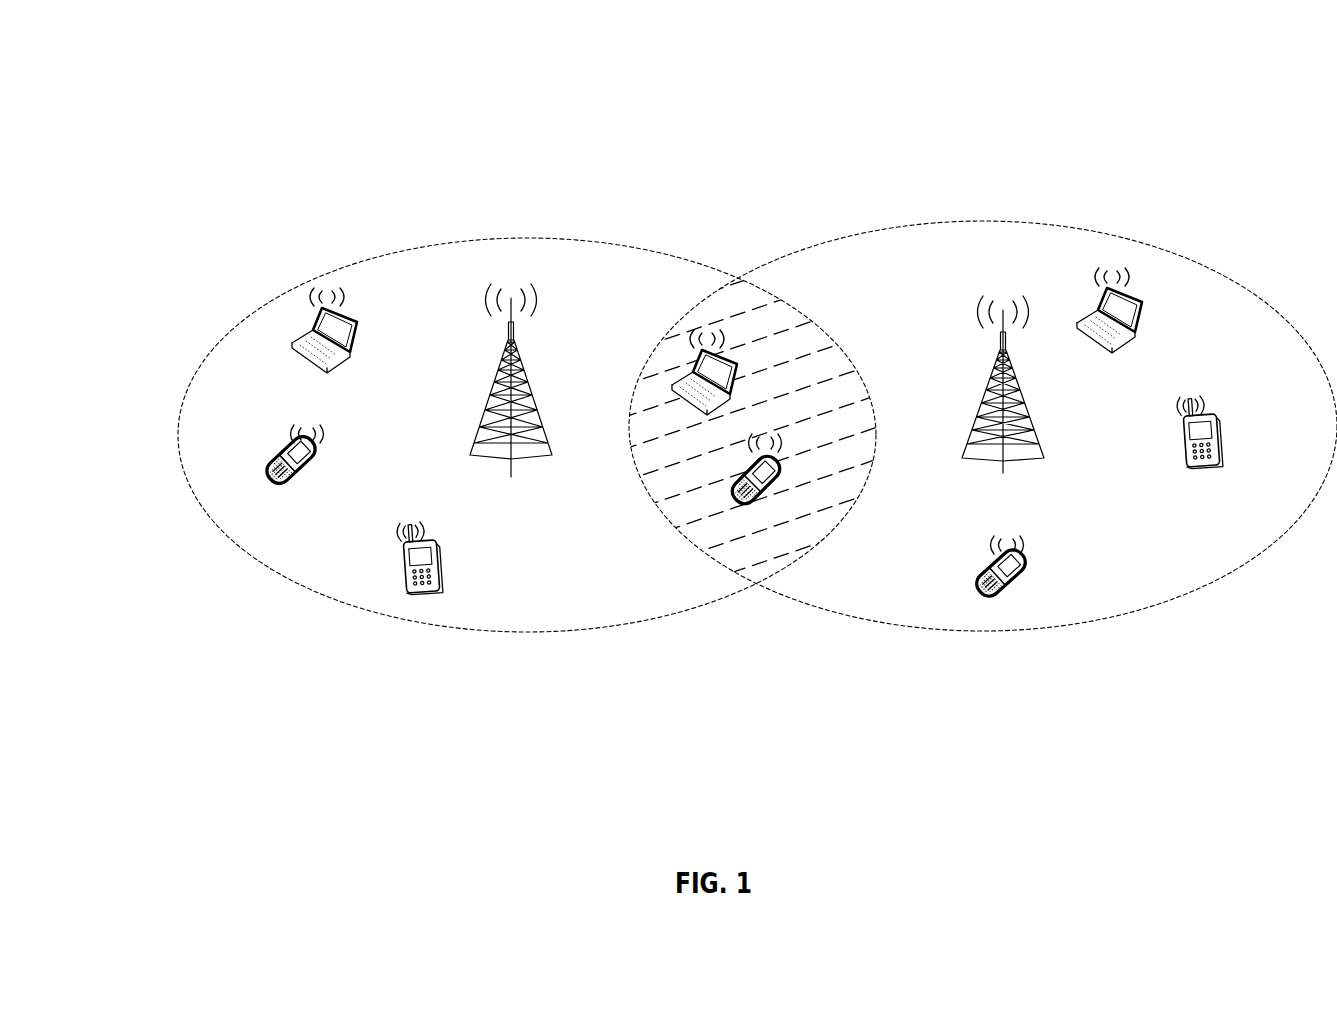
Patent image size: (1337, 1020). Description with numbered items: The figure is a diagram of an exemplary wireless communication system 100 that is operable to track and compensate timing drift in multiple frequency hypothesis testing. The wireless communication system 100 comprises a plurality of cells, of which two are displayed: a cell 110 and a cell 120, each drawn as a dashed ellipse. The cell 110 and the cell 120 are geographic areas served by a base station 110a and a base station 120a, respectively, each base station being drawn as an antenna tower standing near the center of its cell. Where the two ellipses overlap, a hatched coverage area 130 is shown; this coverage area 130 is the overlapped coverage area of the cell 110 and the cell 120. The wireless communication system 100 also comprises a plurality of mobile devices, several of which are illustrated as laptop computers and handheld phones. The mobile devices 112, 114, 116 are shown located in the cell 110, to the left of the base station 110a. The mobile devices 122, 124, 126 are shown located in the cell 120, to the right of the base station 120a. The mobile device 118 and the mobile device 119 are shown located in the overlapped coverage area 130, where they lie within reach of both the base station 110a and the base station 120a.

The wireless communication system 100 is at (451, 82).
The cell 110 is at (633, 247).
The base station 110a is at (545, 298).
The mobile device 112 is at (357, 328).
The mobile device 114 is at (312, 461).
The mobile device 116 is at (440, 576).
The mobile device 118 is at (773, 490).
The mobile device 119 is at (738, 396).
The cell 120 is at (1056, 228).
The base station 120a is at (1040, 314).
The mobile device 122 is at (1144, 307).
The mobile device 124 is at (1218, 448).
The mobile device 126 is at (1018, 573).
The coverage area 130 is at (722, 286).